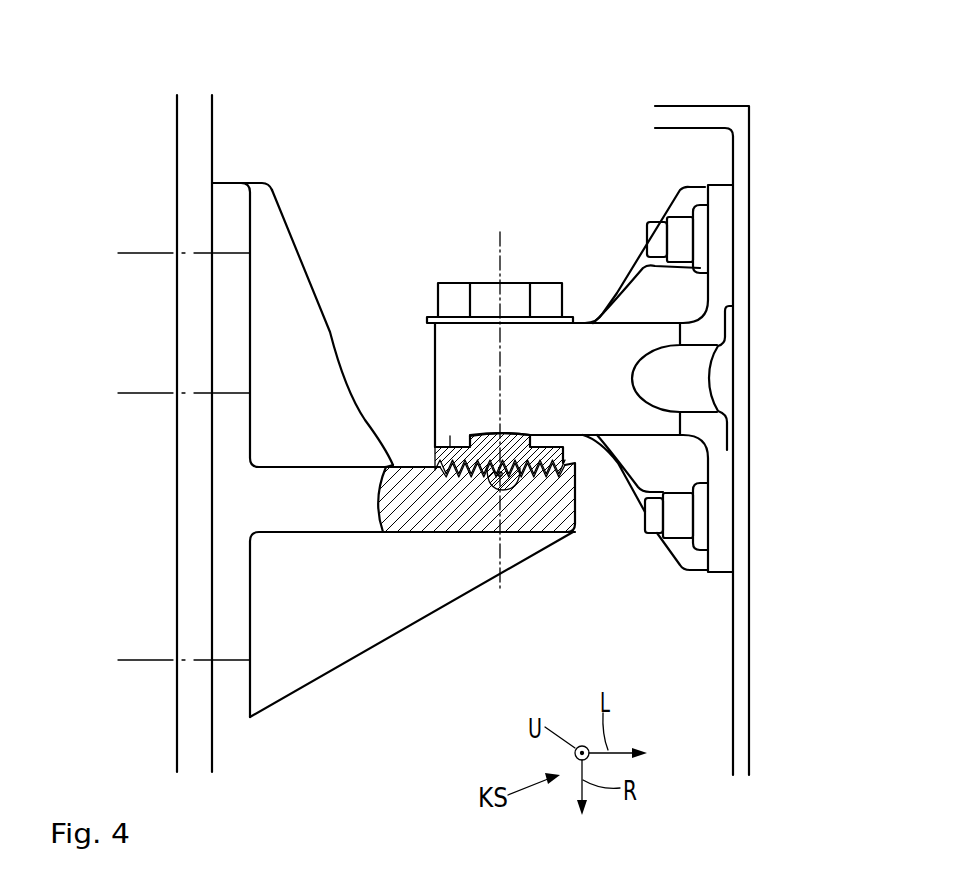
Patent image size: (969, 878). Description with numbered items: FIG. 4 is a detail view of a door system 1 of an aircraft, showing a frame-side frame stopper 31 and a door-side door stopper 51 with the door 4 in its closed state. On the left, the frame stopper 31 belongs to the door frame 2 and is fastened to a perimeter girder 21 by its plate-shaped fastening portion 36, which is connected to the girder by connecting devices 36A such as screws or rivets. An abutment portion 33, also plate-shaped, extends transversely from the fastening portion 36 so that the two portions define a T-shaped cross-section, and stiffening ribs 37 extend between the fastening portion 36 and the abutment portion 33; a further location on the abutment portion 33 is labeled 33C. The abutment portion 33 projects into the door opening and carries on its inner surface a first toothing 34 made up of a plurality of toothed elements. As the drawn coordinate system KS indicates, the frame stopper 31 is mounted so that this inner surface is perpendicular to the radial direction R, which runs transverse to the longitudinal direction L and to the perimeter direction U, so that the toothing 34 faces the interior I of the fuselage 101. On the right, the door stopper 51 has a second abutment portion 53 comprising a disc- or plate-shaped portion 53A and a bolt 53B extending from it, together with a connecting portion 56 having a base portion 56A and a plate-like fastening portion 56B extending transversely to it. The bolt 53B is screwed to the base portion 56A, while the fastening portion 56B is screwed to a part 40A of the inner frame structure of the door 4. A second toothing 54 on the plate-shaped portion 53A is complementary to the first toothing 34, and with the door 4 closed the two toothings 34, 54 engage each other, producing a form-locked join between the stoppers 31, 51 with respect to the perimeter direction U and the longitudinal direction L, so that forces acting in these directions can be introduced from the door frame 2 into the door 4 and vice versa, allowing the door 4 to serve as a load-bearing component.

The door system 1 is at (745, 64).
The door frame 2 is at (212, 748).
The door 4 is at (758, 148).
The perimeter girder 21 is at (190, 150).
The frame stopper 31 is at (393, 443).
The abutment portion 33 is at (347, 518).
The corner of bracket leg 33C is at (393, 448).
The first toothing 34 is at (448, 484).
The fastening portion 36 is at (230, 336).
The connecting devices 36A is at (137, 251).
The stiffening ribs 37 is at (288, 299).
The part of the inner frame structure 40A is at (742, 675).
The door stopper 51 is at (500, 380).
The second abutment portion 53 is at (513, 417).
The plate-shaped portion 53A is at (452, 428).
The bolt 53B is at (548, 428).
The second toothing 54 is at (489, 556).
The connecting portion 56 is at (650, 378).
The base portion 56A is at (518, 343).
The fastening portion 56B is at (722, 233).
The fuselage 101 is at (515, 118).